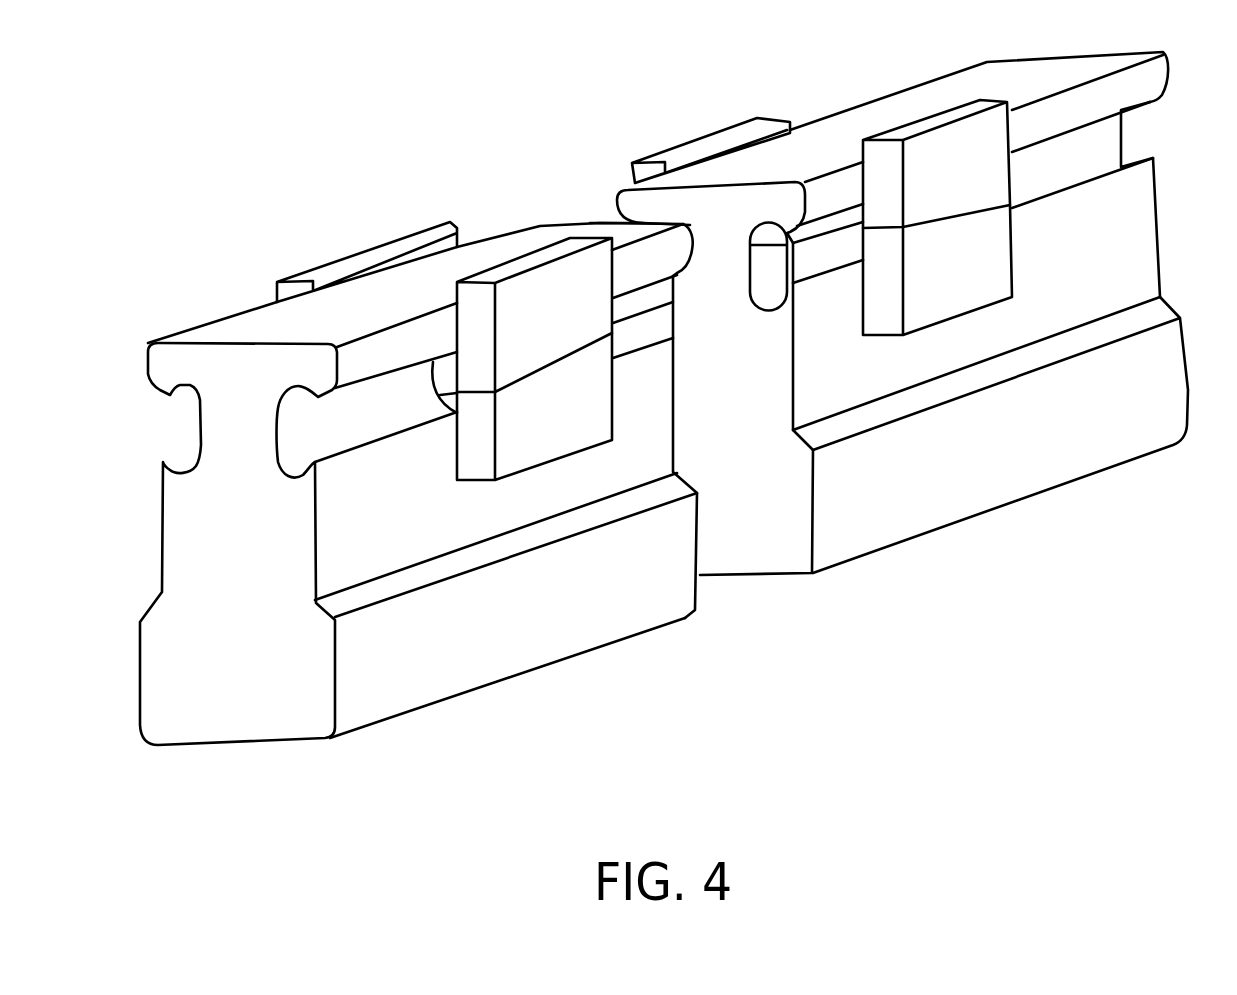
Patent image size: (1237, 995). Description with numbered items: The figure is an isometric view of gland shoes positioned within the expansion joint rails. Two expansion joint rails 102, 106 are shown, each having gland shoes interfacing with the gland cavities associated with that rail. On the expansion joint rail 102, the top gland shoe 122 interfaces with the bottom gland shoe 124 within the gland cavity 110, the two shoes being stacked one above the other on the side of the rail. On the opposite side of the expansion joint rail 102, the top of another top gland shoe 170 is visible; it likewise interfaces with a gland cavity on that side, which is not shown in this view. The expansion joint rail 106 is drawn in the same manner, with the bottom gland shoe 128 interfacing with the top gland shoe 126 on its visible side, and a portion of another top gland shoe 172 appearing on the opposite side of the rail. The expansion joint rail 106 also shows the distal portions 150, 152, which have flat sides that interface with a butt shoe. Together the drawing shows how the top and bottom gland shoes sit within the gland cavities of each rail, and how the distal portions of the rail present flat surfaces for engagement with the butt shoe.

The expansion joint rail 102 is at (912, 313).
The expansion joint rail 106 is at (433, 523).
The gland cavity 110 is at (1103, 147).
The top gland shoe 122 is at (940, 140).
The bottom gland shoe 124 is at (953, 293).
The top gland shoe 126 is at (530, 295).
The bottom gland shoe 128 is at (545, 443).
The distal portion 150 is at (666, 284).
The distal portion 152 is at (651, 326).
The top gland shoe 170 is at (703, 137).
The top gland shoe 172 is at (395, 243).